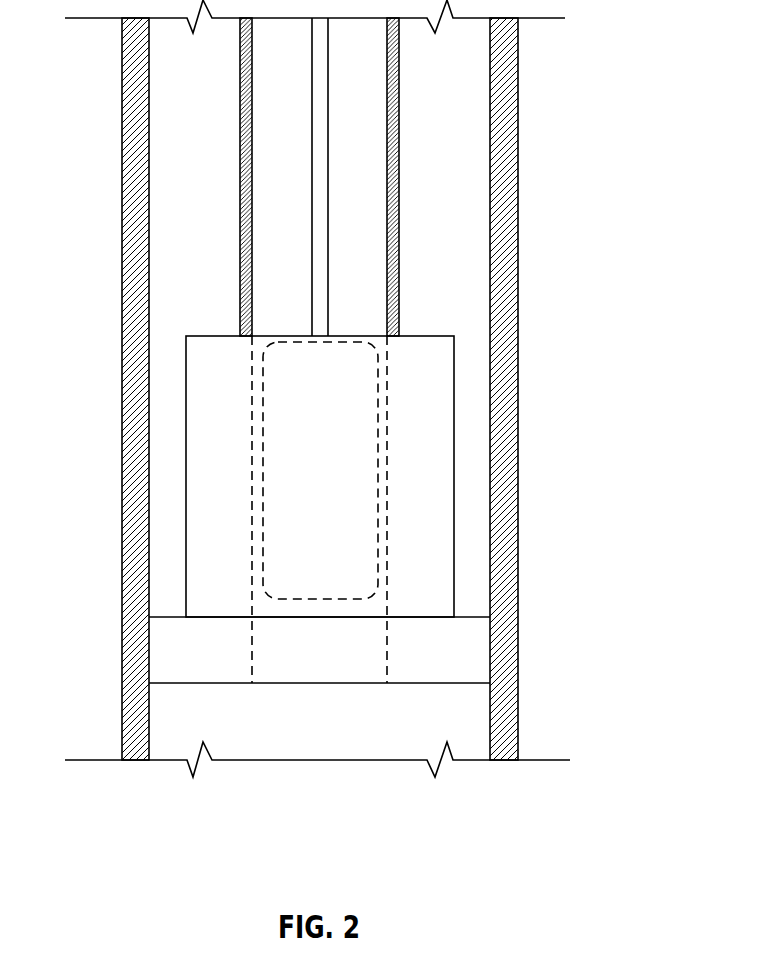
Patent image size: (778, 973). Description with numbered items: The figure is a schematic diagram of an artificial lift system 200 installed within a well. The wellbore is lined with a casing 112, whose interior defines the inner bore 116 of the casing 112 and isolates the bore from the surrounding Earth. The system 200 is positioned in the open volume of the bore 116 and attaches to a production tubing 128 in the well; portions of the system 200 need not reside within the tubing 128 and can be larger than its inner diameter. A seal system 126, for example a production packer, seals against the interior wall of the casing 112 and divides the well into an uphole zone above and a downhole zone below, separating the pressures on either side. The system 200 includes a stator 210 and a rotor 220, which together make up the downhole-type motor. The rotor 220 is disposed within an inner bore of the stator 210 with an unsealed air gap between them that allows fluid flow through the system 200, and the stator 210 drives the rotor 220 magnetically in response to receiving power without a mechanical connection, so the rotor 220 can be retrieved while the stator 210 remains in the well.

The casing 112 is at (518, 199).
The inner bore of the casing 116 is at (212, 99).
The seal system 126 is at (467, 649).
The production tubing 128 is at (240, 227).
The system 200 is at (470, 480).
The stator 210 is at (454, 407).
The rotor 220 is at (382, 372).